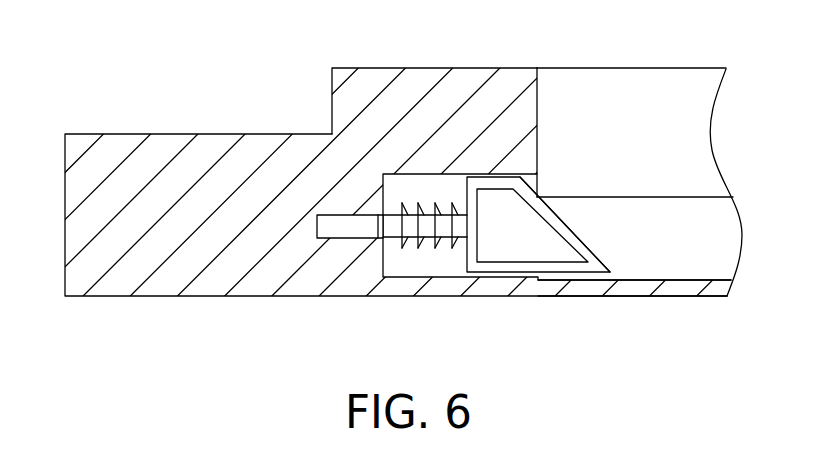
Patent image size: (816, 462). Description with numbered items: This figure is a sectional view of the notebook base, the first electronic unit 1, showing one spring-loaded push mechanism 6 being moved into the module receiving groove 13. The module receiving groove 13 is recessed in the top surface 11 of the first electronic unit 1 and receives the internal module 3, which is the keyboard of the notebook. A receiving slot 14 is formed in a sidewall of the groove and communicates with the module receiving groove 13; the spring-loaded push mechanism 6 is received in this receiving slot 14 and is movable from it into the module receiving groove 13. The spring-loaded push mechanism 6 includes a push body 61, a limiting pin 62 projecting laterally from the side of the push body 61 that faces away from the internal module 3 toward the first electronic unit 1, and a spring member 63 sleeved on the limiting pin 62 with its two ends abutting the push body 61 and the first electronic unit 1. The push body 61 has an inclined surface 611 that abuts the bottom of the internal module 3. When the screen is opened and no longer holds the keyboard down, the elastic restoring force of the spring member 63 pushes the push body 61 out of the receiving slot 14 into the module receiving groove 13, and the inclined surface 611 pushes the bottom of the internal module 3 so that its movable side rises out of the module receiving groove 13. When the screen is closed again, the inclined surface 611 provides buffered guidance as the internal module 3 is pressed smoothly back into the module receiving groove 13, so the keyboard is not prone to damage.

The first electronic unit 1 is at (147, 217).
The top surface 11 is at (233, 134).
The internal module 3 is at (668, 112).
The module receiving groove 13 is at (700, 271).
The spring-loaded push mechanism 6 is at (560, 212).
The push body 61 is at (535, 240).
The inclined surface 611 is at (583, 240).
The limiting pin 62 is at (391, 230).
The spring member 63 is at (437, 228).
The receiving slot 14 is at (417, 275).